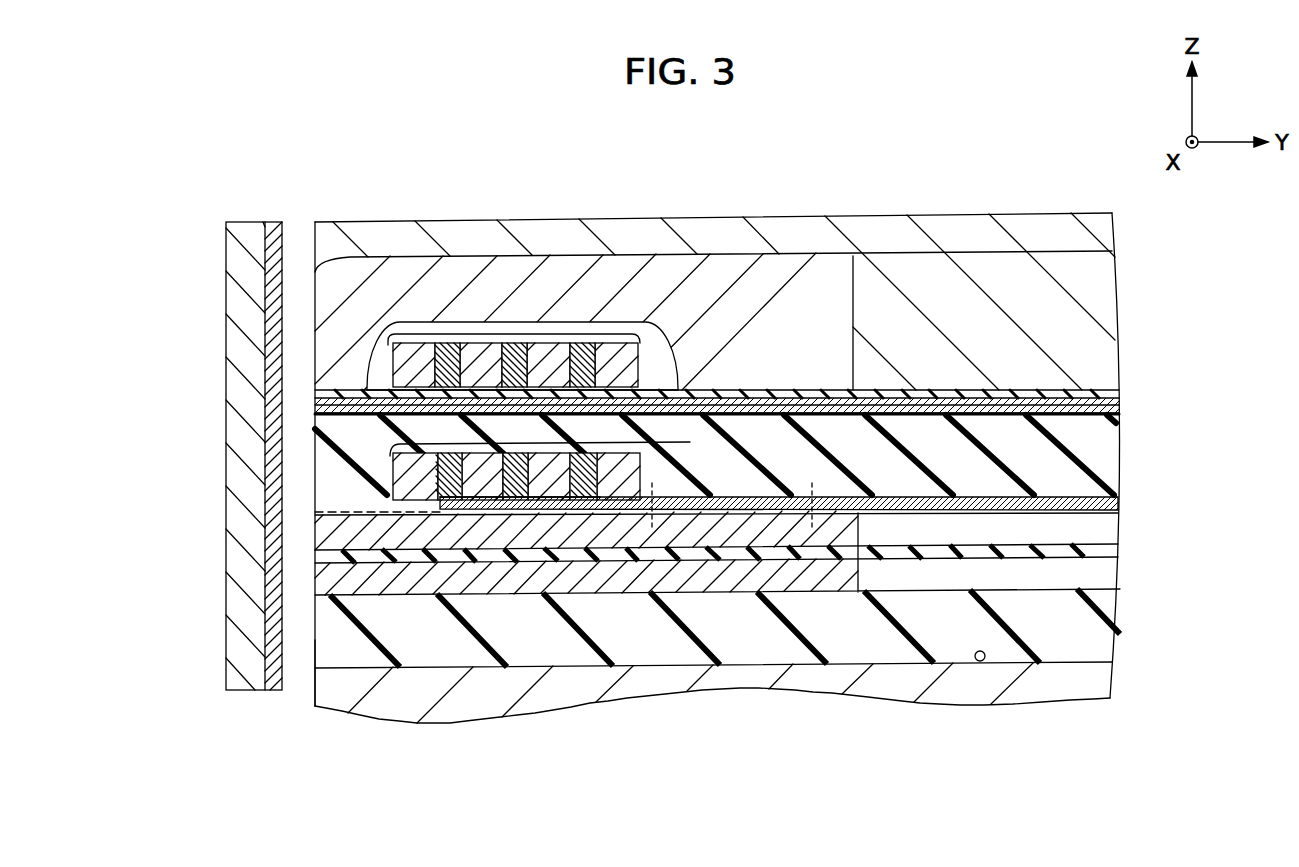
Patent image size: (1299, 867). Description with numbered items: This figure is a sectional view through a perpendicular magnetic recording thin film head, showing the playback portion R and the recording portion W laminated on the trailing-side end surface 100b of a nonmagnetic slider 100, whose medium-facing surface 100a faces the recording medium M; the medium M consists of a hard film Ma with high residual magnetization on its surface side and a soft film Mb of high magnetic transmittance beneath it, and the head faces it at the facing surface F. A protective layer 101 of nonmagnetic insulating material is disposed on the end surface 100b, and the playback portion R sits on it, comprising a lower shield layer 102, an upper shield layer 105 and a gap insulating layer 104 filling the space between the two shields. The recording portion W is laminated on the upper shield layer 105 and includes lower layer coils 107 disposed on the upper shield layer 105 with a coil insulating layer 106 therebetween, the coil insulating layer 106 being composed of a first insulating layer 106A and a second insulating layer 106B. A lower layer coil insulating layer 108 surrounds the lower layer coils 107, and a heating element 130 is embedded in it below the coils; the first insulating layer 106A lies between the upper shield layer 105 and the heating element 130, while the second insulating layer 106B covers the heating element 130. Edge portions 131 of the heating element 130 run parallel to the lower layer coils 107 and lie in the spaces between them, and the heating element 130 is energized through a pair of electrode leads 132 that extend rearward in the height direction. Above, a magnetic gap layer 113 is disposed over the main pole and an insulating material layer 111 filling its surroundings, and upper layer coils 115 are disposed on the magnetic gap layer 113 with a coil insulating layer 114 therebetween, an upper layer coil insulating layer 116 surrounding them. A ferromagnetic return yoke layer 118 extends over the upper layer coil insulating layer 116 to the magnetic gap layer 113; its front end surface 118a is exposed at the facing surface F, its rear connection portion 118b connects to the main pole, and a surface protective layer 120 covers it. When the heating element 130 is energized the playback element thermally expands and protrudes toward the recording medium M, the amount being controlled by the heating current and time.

The slider 100 is at (1068, 678).
The medium-facing surface 100a is at (318, 692).
The trailing-side end surface 100b is at (980, 662).
The protective layer 101 is at (325, 637).
The lower shield layer 102 is at (325, 587).
The gap insulating layer 104 is at (640, 562).
The upper shield layer 105 is at (325, 542).
The coil insulating layer 106 is at (716, 665).
The first insulating layer 106A is at (387, 508).
The second insulating layer 106B is at (432, 507).
The lower layer coils 107 is at (486, 342).
The lower layer coil insulating layer 108 is at (325, 482).
The insulating material layer 111 is at (1017, 400).
The magnetic gap layer 113 is at (312, 398).
The coil insulating layer 114 is at (582, 334).
The upper layer coils 115 is at (512, 342).
The upper layer coil insulating layer 116 is at (688, 345).
The return yoke layer 118 is at (630, 272).
The front end surface 118a is at (310, 290).
The connection portion 118b is at (787, 300).
The surface protective layer 120 is at (913, 268).
The heating element 130 is at (567, 510).
The edge portions 131 is at (443, 514).
The electrode leads 132 is at (780, 774).
The facing surface F is at (310, 233).
The recording medium M is at (259, 508).
The hard film Ma is at (280, 688).
The soft film Mb is at (242, 688).
The recording portion W is at (1140, 247).
The playback portion R is at (1140, 511).